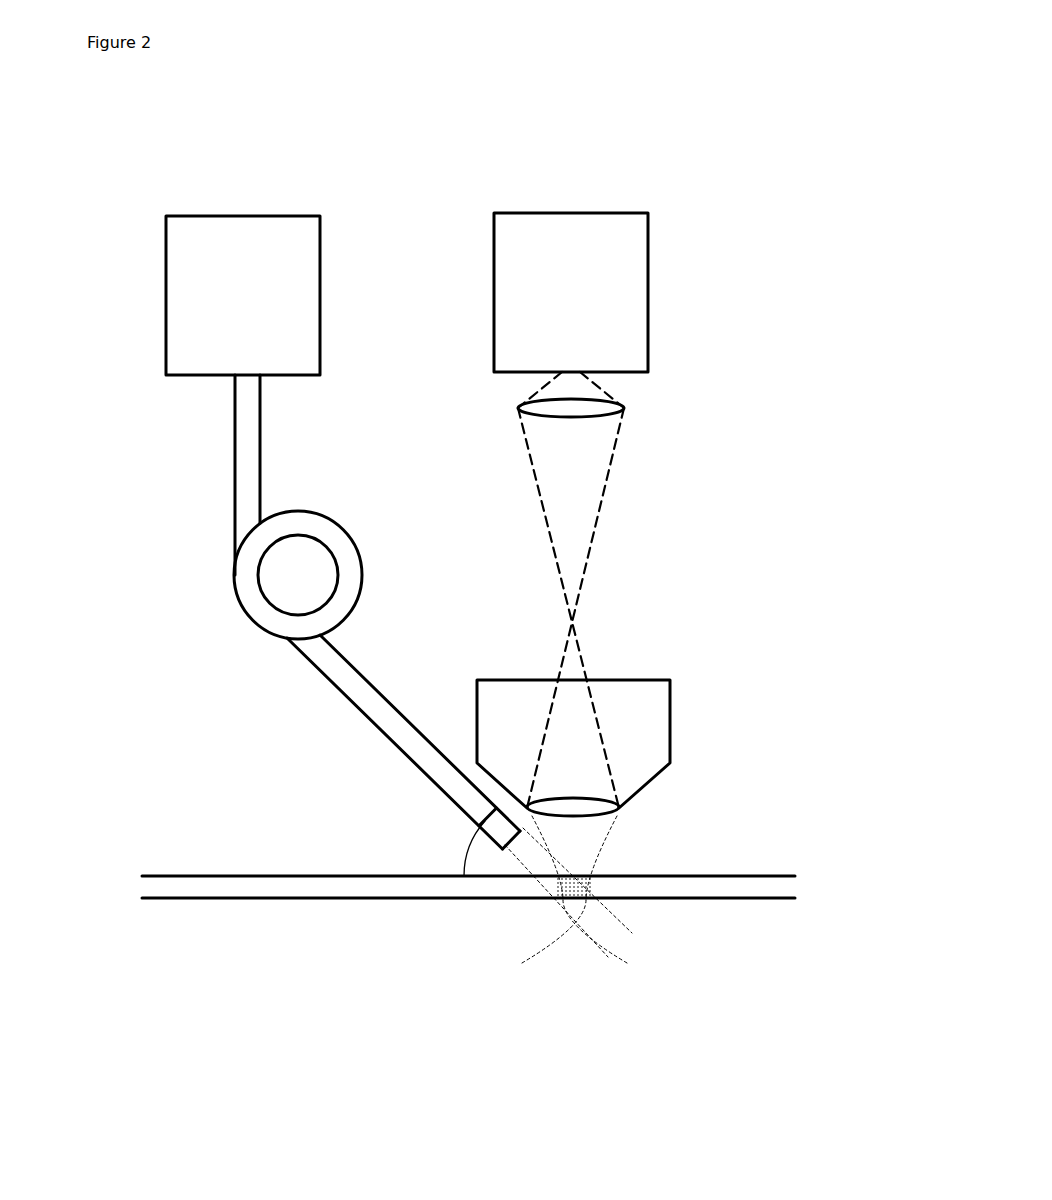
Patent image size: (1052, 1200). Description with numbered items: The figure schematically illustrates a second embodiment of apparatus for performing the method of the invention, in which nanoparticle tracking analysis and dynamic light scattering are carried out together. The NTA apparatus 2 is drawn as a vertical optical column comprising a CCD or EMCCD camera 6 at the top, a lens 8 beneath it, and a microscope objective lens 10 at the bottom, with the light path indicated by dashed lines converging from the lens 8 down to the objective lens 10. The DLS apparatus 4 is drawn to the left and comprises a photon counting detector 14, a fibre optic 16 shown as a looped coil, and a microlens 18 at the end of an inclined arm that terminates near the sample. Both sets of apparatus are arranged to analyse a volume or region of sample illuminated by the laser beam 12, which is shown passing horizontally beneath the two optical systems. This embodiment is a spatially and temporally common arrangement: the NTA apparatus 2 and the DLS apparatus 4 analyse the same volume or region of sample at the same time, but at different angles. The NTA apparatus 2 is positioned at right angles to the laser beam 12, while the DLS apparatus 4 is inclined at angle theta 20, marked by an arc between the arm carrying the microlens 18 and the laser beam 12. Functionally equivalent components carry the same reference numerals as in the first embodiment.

The NTA apparatus 2 is at (582, 192).
The DLS apparatus 4 is at (248, 202).
The CCD or EMCCD camera 6 is at (652, 298).
The lens 8 is at (628, 408).
The microscope objective lens 10 is at (672, 747).
The laser beam 12 is at (645, 903).
The photon counting detector 14 is at (163, 290).
The fibre optic 16 is at (230, 603).
The microlens 18 is at (477, 826).
The angle theta 20 is at (456, 860).